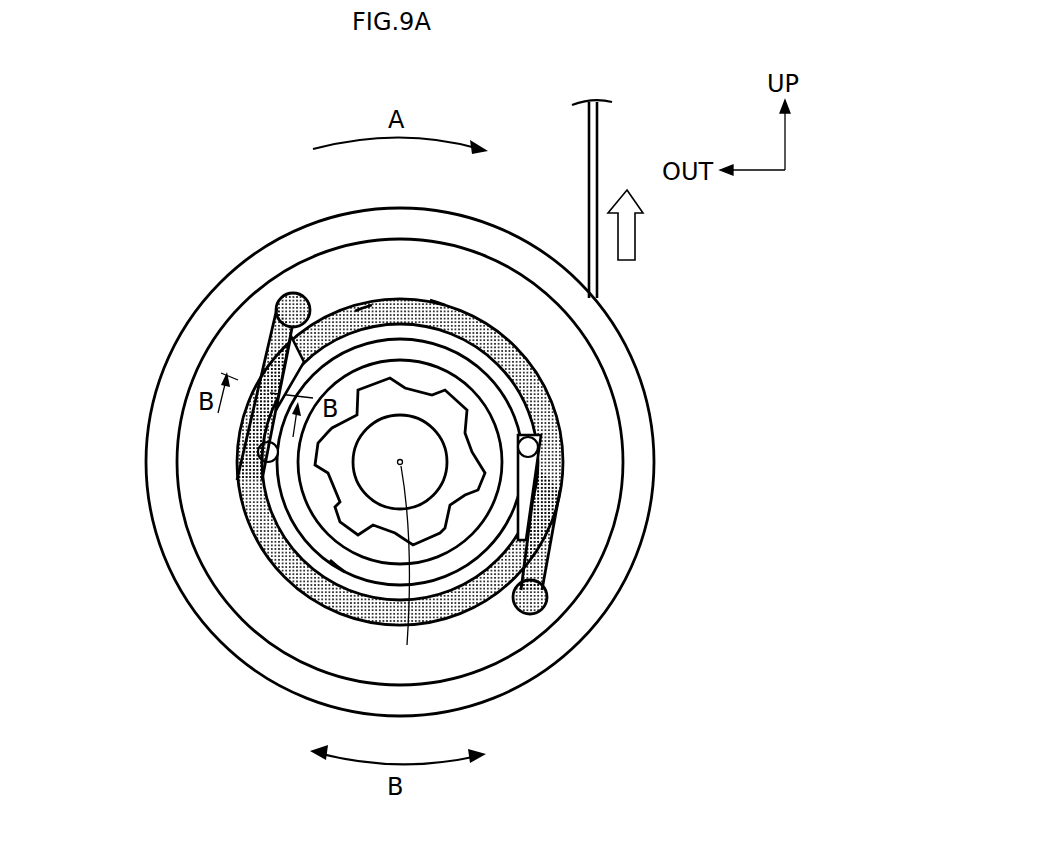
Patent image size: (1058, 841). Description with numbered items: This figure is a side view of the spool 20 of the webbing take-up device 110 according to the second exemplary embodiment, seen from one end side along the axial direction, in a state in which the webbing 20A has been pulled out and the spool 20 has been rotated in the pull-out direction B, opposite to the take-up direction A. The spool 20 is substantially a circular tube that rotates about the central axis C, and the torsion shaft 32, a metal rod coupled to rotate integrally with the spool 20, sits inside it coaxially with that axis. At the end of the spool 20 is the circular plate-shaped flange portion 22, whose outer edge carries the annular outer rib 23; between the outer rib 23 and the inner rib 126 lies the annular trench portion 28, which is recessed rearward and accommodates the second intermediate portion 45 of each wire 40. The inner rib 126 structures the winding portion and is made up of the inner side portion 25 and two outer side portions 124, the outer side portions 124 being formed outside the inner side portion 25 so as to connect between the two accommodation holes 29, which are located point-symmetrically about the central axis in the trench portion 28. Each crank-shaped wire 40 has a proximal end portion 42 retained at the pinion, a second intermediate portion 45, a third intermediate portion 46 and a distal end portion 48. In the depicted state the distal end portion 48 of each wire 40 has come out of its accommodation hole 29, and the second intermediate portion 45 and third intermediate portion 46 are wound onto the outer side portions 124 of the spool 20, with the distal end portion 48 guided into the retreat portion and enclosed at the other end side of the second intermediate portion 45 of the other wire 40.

The webbing take-up device 110 is at (477, 100).
The spool 20 is at (648, 362).
The webbing 20A is at (589, 143).
The flange portion 22 is at (622, 316).
The outer rib 23 is at (638, 495).
The inner side portion 25 is at (333, 578).
The trench portion 28 is at (600, 452).
The accommodation hole 29 is at (563, 438).
The torsion shaft 32 is at (451, 403).
The wire 40 is at (399, 456).
The proximal end portion 42 is at (286, 300).
The second intermediate portion 45 is at (273, 345).
The third intermediate portion 46 is at (497, 330).
The distal end portion 48 is at (258, 360).
The outer side portion 124 is at (358, 302).
The inner rib 126 is at (440, 290).